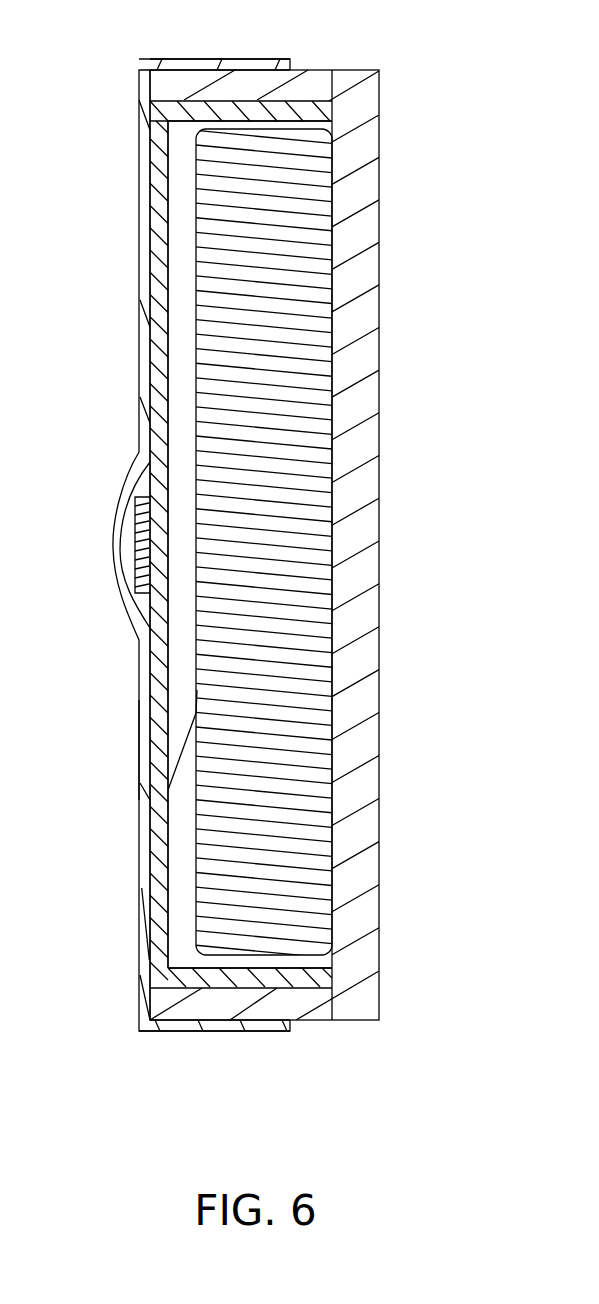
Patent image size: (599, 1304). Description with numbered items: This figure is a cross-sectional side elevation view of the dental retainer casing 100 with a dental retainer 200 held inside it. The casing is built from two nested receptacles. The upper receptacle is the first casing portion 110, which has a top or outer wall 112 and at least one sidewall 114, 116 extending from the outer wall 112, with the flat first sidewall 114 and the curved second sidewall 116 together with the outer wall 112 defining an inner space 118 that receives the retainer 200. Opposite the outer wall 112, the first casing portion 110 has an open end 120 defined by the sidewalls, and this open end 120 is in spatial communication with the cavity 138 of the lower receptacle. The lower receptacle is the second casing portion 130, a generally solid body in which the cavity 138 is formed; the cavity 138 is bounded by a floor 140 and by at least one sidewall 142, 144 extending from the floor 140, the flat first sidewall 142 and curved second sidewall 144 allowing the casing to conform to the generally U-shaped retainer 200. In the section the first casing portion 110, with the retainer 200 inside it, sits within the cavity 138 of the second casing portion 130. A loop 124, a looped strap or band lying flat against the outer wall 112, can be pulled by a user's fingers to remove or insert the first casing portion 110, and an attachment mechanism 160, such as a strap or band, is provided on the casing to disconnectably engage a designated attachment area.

The dental retainer casing 100 is at (140, 46).
The first casing portion 110 is at (160, 243).
The outer wall 112 is at (150, 283).
The first sidewall 114 is at (218, 988).
The second sidewall 116 is at (245, 100).
The inner space 118 is at (180, 361).
The open end 120 is at (340, 122).
The loop 124 is at (134, 521).
The second casing portion 130 is at (380, 486).
The cavity 138 is at (180, 401).
The floor 140 is at (325, 437).
The first sidewall 142 is at (303, 980).
The second sidewall 144 is at (302, 104).
The attachment mechanism 160 is at (140, 745).
The retainer 200 is at (284, 689).